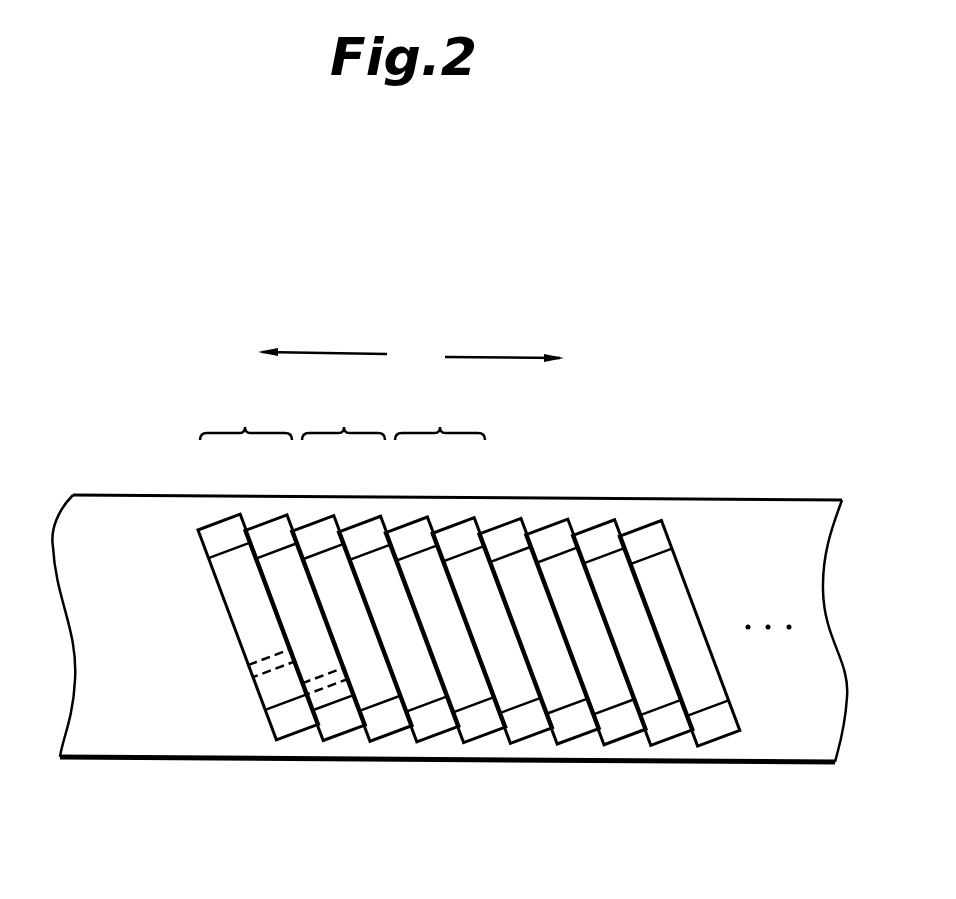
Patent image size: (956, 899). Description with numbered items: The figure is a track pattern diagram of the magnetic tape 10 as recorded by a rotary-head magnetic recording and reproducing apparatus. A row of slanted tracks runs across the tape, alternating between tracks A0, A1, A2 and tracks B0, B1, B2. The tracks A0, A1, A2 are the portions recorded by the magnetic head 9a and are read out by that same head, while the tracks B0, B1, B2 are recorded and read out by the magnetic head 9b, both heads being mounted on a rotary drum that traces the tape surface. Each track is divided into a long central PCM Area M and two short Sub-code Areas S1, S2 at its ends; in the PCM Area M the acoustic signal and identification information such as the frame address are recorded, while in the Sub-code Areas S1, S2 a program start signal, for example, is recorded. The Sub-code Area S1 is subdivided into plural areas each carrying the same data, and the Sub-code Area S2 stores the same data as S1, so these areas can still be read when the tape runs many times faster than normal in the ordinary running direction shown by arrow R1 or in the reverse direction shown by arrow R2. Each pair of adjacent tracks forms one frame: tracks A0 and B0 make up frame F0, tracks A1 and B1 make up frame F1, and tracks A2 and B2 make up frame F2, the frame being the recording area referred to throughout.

The magnetic tape 10 is at (140, 757).
The PCM Area M is at (444, 598).
The Sub-code Area S1 is at (207, 548).
The Sub-code Area S2 is at (283, 725).
The magnetic head 9a is at (248, 678).
The magnetic head 9b is at (302, 685).
The track A0 is at (233, 598).
The track B0 is at (282, 590).
The track A1 is at (313, 518).
The track B1 is at (362, 518).
The track A2 is at (407, 518).
The track B2 is at (455, 518).
The frame F0 is at (246, 414).
The frame F1 is at (343, 414).
The frame F2 is at (440, 414).
The arrow (ordinary running direction) R1 is at (342, 353).
The arrow (reverse direction) R2 is at (505, 357).